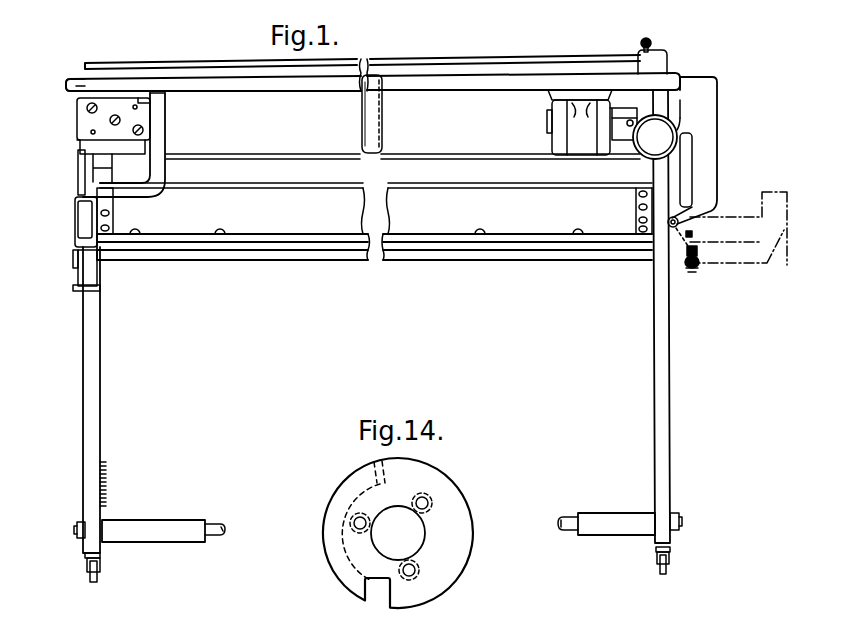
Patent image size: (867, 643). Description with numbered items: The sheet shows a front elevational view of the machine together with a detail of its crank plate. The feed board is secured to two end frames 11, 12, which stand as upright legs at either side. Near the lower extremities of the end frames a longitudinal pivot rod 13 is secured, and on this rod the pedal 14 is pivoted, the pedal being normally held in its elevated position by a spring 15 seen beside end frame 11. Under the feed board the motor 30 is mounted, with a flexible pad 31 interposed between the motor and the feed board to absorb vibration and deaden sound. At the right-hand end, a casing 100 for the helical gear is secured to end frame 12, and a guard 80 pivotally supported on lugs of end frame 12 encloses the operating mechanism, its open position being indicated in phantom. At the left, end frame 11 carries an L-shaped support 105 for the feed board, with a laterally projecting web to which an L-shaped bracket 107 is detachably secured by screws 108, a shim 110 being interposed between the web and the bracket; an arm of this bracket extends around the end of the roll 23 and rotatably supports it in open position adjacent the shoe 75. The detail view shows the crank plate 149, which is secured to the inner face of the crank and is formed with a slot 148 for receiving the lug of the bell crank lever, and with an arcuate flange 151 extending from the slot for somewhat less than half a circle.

In FIG. 1, the end frame 11 is at (99, 384).
In FIG. 1, the end frame 12 is at (665, 369).
In FIG. 1, the longitudinal pivot rod 13 is at (567, 530).
In FIG. 1, the pedal 14 is at (622, 531).
In FIG. 1, the spring 15 is at (104, 484).
In FIG. 1, the roll 23 is at (360, 74).
In FIG. 1, the motor 30 is at (582, 148).
In FIG. 1, the flexible pad 31 is at (573, 88).
In FIG. 1, the shoe 75 is at (451, 64).
In FIG. 1, the guard 80 is at (706, 180).
In FIG. 1, the casing 100 is at (670, 134).
In FIG. 1, the L-shaped support 105 is at (163, 121).
In FIG. 1, the L-shaped bracket 107 is at (80, 110).
In FIG. 1, the screws 108 is at (133, 131).
In FIG. 1, the shim 110 is at (77, 87).
In FIG. 14, the slot 148 is at (377, 601).
In FIG. 14, the crank plate 149 is at (466, 527).
In FIG. 14, the arcuate flange 151 is at (352, 508).